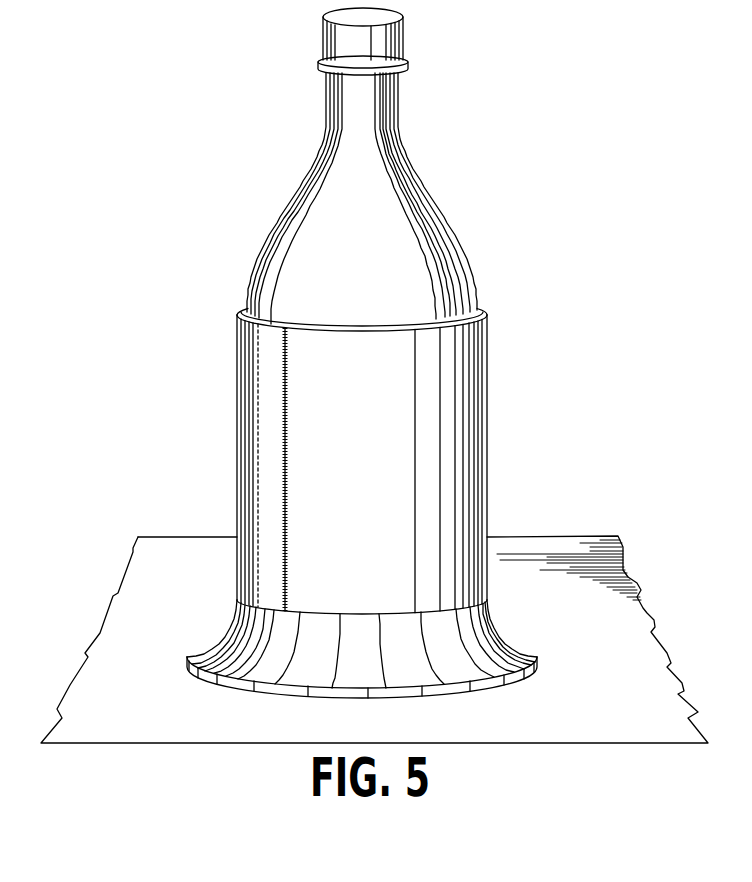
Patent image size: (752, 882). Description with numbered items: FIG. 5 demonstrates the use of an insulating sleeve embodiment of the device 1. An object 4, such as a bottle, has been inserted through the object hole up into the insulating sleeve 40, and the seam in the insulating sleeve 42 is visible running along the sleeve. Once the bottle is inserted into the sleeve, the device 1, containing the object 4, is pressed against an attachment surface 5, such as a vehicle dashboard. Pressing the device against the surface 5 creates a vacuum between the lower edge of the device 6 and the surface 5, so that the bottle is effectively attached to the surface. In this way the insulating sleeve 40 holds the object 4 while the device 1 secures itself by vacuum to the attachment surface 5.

The device 1 is at (349, 685).
The object 4 is at (412, 192).
The surface 5 is at (193, 553).
The lower edge of the device 6 is at (446, 708).
The insulating sleeve 40 is at (358, 462).
The seam in the insulating sleeve 42 is at (285, 395).